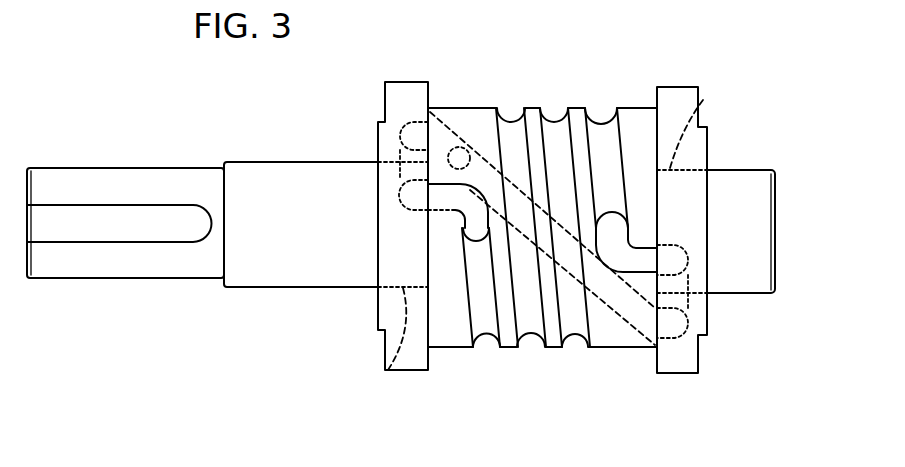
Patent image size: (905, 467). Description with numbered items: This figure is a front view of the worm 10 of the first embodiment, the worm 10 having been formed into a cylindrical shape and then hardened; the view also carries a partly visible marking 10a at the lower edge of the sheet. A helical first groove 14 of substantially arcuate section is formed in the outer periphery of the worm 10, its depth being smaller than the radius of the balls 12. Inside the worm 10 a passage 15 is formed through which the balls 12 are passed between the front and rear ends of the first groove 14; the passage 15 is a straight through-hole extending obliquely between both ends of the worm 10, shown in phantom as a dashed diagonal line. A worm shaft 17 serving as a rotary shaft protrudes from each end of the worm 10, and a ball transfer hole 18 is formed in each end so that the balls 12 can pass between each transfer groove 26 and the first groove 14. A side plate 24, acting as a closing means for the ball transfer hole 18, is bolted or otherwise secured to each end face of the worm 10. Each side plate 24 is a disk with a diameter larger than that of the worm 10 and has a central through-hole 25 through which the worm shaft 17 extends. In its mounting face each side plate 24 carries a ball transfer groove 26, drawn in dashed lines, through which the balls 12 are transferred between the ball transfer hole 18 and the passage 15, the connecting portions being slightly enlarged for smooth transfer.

The worm 10 is at (585, 383).
The worm gear assembly variant 10a is at (249, 461).
The balls 12 is at (452, 128).
The first groove 14 is at (478, 318).
The passage 15 is at (625, 322).
The worm shaft 17 is at (298, 171).
The ball transfer hole 18 is at (445, 187).
The side plate 24 is at (385, 310).
The through-hole 25 is at (388, 370).
The ball transfer groove 26 is at (400, 162).